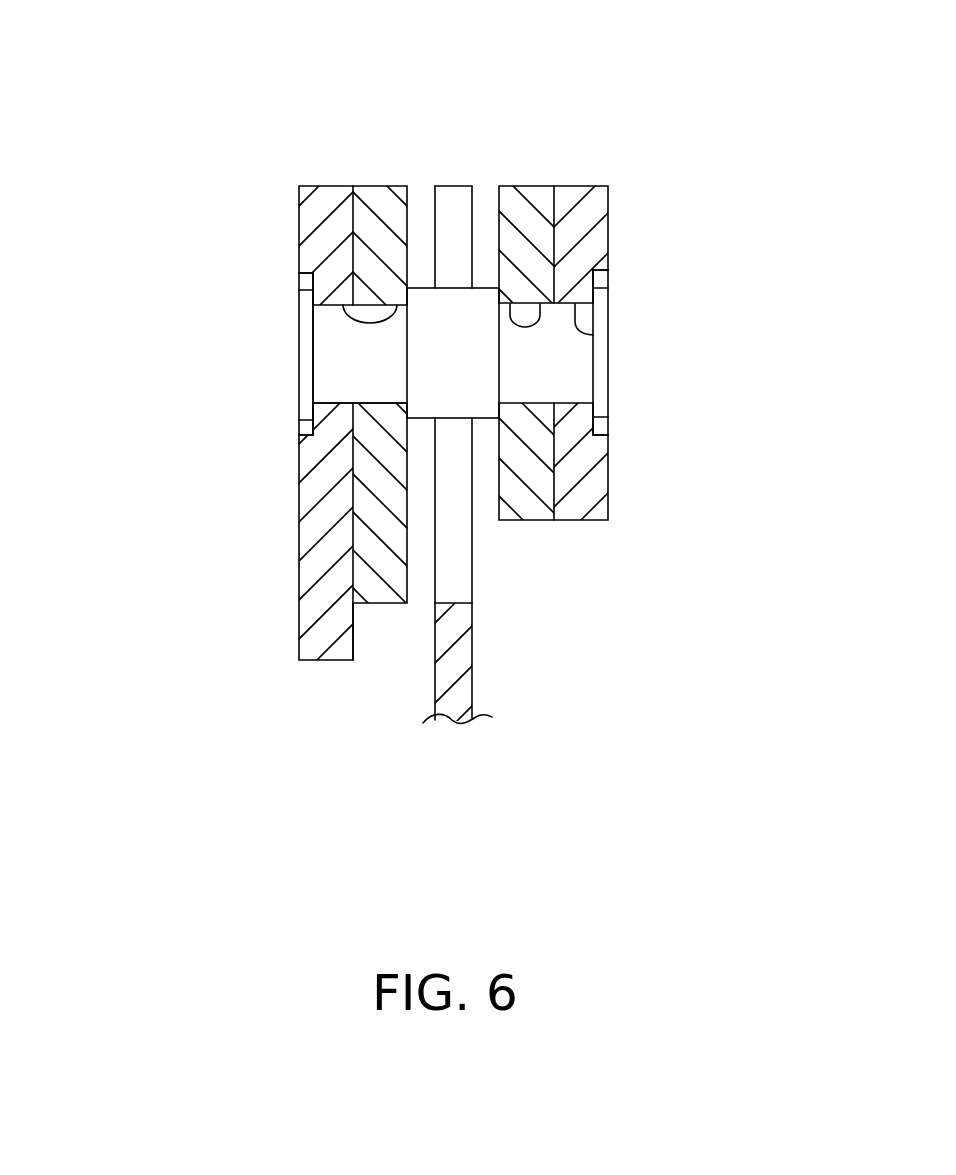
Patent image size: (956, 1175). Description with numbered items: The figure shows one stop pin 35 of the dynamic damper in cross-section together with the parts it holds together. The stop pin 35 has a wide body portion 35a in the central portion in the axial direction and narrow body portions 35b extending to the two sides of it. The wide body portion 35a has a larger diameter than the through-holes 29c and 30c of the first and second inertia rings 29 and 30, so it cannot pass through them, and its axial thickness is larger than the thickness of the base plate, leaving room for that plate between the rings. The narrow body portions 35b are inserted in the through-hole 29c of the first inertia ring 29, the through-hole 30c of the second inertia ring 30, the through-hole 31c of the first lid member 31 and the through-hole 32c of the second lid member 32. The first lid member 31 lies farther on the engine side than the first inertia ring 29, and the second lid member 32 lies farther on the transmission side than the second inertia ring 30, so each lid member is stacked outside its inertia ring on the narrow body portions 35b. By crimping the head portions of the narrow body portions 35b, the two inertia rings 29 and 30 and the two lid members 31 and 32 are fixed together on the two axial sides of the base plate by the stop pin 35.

The first inertia ring 29 is at (382, 210).
The second inertia ring 30 is at (522, 200).
The first lid member 31 is at (330, 638).
The second lid member 32 is at (587, 495).
The through-hole of first inertia ring 29c is at (343, 318).
The through-hole of second inertia ring 30c is at (540, 306).
The through-hole of first lid member 31c is at (338, 402).
The through-hole of second lid member 32c is at (596, 335).
The stop pin 35 is at (378, 405).
The wide body portion 35a is at (465, 374).
The narrow body portion 35b is at (342, 337).